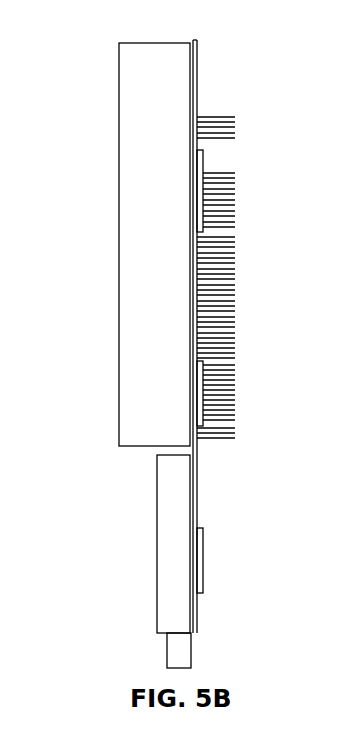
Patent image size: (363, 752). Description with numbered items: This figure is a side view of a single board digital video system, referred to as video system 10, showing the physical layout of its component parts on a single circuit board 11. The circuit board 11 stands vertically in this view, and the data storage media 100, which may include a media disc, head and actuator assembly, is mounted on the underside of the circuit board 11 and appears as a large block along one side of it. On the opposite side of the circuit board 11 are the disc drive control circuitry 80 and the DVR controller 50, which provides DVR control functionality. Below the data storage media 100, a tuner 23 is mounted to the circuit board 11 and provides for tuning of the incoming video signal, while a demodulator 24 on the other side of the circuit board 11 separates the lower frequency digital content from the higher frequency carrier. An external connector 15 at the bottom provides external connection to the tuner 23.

The video system 10 is at (285, 66).
The circuit board 11 is at (197, 40).
The external connectors 15 is at (190, 653).
The tuners 23 is at (157, 617).
The demodulators 24 is at (203, 563).
The DVR controller 50 is at (215, 394).
The disc drive control circuitry 80 is at (204, 158).
The data storage media 100 is at (150, 59).